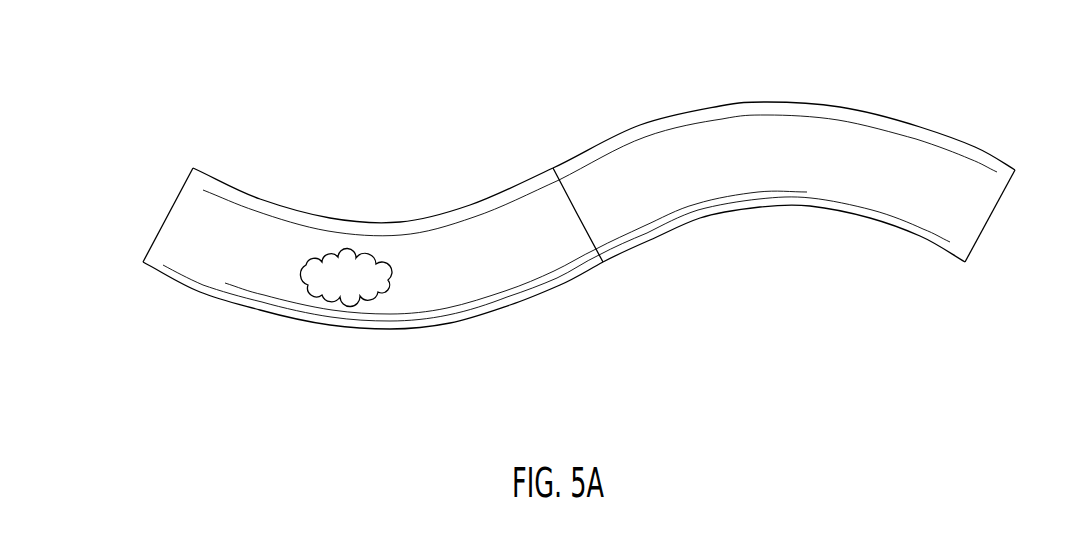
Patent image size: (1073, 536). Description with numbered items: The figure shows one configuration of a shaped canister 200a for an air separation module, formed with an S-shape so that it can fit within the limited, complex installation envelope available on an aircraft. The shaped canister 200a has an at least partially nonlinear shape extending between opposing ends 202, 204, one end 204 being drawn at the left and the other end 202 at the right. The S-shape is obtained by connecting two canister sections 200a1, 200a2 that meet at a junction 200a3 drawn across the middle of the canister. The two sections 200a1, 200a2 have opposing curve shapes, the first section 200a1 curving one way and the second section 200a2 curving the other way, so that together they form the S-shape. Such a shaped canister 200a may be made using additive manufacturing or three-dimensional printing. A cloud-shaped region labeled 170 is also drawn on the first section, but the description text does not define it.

The shaped canister 200a is at (582, 247).
The section 200a1 is at (482, 300).
The section 200a2 is at (722, 203).
The junction 200a3 is at (603, 262).
The end 202 is at (973, 215).
The end 204 is at (185, 212).
The defect region 170 is at (340, 285).